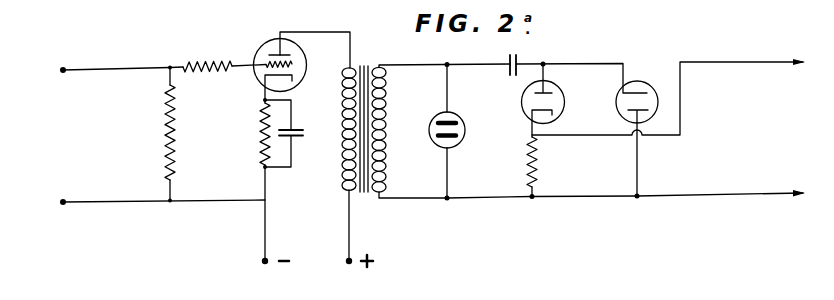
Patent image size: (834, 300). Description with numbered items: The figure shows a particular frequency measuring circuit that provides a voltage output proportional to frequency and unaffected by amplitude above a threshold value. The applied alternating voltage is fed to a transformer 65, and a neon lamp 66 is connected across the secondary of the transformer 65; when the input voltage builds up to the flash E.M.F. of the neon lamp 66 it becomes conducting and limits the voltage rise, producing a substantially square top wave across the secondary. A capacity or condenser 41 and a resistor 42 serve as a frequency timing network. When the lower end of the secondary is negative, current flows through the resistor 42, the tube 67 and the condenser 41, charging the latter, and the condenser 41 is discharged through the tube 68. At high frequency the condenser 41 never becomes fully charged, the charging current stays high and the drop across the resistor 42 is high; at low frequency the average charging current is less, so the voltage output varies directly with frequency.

The condenser 41 is at (519, 62).
The resistor 42 is at (538, 172).
The transformer 65 is at (387, 112).
The neon lamp 66 is at (466, 126).
The tube 67 is at (565, 106).
The tube 68 is at (646, 83).